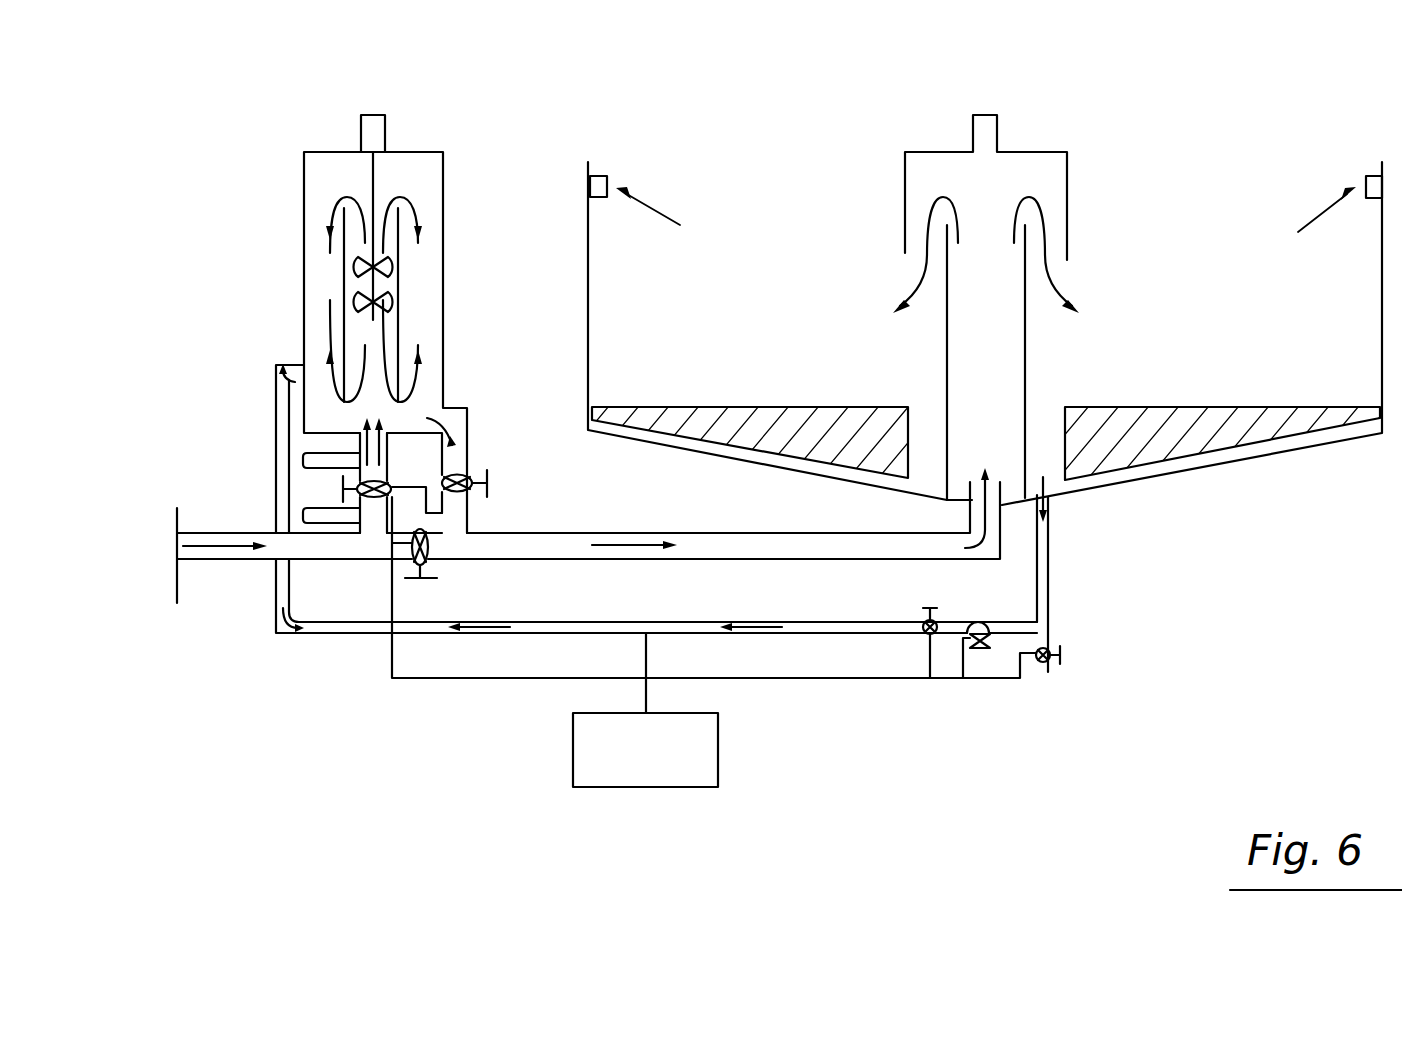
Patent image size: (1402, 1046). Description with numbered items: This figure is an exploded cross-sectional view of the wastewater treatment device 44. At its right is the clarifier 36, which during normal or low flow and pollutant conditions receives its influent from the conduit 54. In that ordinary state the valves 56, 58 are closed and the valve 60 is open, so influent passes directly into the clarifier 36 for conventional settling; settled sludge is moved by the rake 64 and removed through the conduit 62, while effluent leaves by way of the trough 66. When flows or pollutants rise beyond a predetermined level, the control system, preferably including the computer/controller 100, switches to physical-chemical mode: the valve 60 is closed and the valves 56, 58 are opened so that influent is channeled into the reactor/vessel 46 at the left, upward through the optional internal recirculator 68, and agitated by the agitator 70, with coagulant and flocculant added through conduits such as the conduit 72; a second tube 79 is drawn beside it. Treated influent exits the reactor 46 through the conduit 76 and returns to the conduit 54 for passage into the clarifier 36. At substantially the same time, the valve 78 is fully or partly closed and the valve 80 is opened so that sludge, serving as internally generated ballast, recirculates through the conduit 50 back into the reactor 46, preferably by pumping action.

The clarifier 36 is at (703, 322).
The device 44 is at (388, 742).
The reactor/vessel 46 is at (304, 215).
The conduit 50 is at (331, 633).
The conduit 54 is at (197, 532).
The valve 56 is at (378, 482).
The valve 58 is at (462, 470).
The valve 60 is at (430, 550).
The conduit 62 is at (1050, 585).
The rake 64 is at (1172, 445).
The trough 66 is at (607, 178).
The internal recirculator 68 is at (343, 292).
The agitator 70 is at (375, 185).
The conduit 72 is at (305, 453).
The conduit 76 is at (468, 518).
The valve 78 is at (1050, 648).
The tube 79 is at (305, 510).
The valve 80 is at (922, 637).
The computer/controller 100 is at (608, 768).